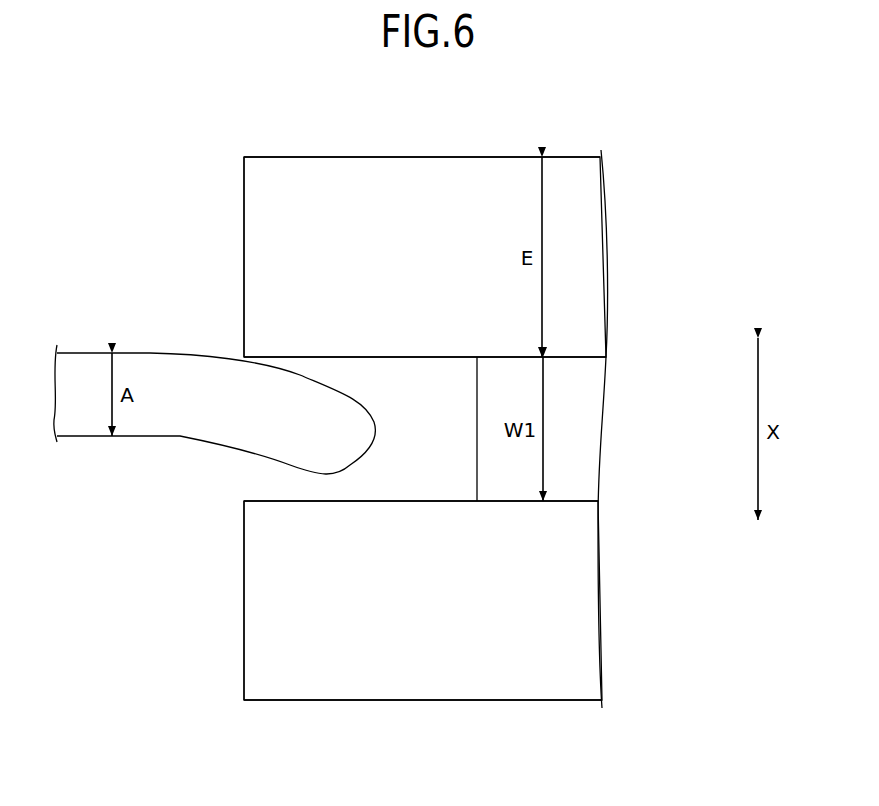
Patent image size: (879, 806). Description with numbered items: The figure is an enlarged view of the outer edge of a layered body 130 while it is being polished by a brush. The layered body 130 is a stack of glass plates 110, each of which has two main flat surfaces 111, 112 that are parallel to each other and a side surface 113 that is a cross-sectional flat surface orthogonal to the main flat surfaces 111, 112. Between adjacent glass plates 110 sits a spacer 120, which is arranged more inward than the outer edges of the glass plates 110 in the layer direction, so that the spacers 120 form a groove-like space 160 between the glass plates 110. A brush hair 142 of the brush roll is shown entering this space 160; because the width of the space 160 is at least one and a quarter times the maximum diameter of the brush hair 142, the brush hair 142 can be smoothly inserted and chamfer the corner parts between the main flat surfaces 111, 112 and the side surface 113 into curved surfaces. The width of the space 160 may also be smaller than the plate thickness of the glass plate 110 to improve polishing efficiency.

The glass plate 110 is at (585, 253).
The main flat surface 111 is at (411, 157).
The main flat surface 112 is at (412, 357).
The side surface 113 is at (244, 257).
The spacer 120 is at (584, 435).
The layered body 130 is at (291, 146).
The brush hair 142 is at (185, 430).
The space 160 is at (241, 478).